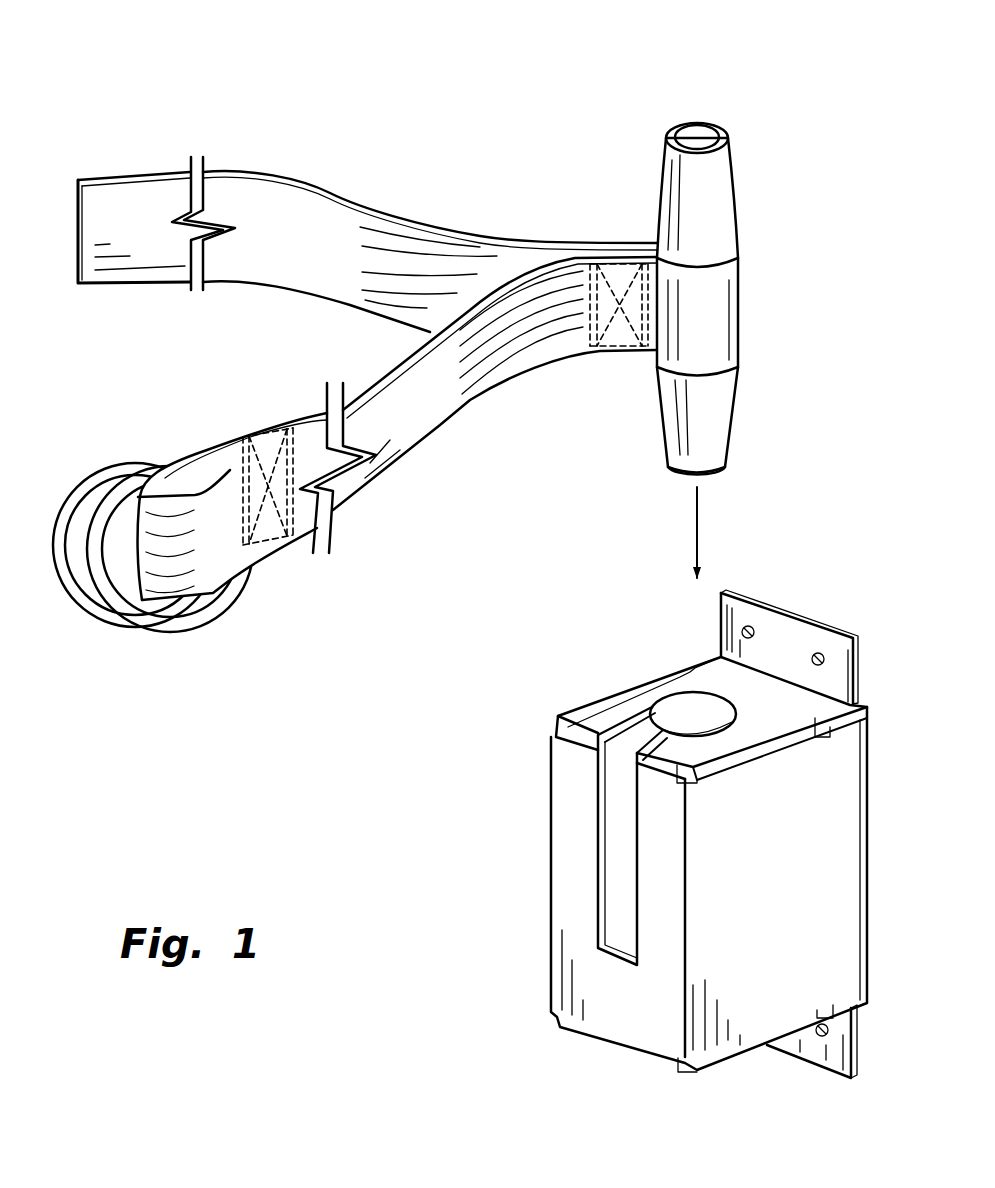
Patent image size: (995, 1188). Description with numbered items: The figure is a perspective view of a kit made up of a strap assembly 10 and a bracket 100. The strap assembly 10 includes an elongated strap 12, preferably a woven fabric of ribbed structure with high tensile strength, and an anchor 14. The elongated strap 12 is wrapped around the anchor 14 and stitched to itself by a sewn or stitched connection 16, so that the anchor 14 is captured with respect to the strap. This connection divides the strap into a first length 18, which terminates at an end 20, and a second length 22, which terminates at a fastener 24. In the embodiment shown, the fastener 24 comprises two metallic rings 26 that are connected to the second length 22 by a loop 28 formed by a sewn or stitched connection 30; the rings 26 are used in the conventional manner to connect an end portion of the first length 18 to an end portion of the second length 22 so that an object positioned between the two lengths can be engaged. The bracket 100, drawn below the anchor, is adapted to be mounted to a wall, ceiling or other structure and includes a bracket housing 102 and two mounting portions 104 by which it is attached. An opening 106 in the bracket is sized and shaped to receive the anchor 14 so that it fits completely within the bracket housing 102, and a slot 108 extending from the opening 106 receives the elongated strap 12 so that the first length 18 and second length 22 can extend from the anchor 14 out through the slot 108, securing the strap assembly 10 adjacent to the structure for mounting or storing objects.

The strap assembly 10 is at (470, 148).
The elongated strap 12 is at (337, 191).
The anchor 14 is at (736, 172).
The sewn or stitched connection 16 is at (618, 350).
The first length 18 is at (333, 257).
The end 20 is at (75, 215).
The second length 22 is at (440, 409).
The fastener 24 is at (83, 622).
The metallic rings 26 is at (106, 620).
The loop 28 is at (205, 603).
The sewn or stitched connection 30 is at (258, 432).
The bracket 100 is at (498, 1062).
The bracket housing 102 is at (797, 890).
The mounting portions 104 is at (752, 595).
The opening 106 is at (678, 690).
The slot 108 is at (605, 952).